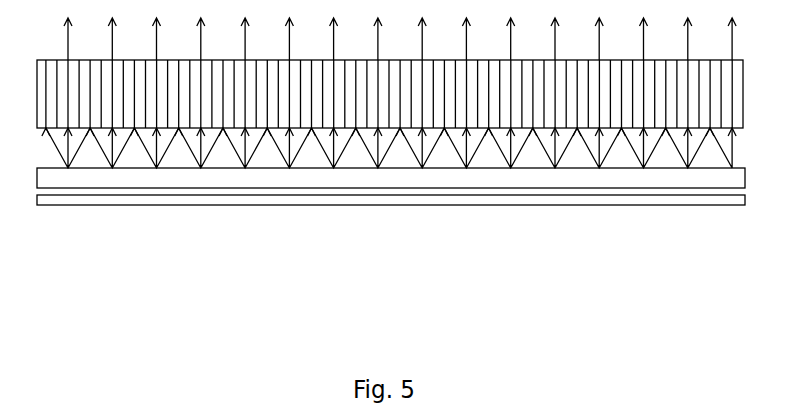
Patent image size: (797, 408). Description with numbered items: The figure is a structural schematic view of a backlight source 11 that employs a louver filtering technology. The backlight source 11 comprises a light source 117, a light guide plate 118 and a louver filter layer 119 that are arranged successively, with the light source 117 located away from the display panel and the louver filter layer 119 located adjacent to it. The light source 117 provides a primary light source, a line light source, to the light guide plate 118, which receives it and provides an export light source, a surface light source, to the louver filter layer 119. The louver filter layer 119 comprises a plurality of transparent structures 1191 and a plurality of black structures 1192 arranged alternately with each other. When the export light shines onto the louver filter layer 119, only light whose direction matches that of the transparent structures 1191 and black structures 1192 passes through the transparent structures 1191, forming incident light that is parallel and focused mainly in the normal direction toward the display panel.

The backlight source 11 is at (391, 165).
The light source 117 is at (462, 278).
The light guide plate 118 is at (382, 173).
The louver filter layer 119 is at (390, 169).
The transparent structure 1191 is at (532, 95).
The black structure 1192 is at (495, 95).